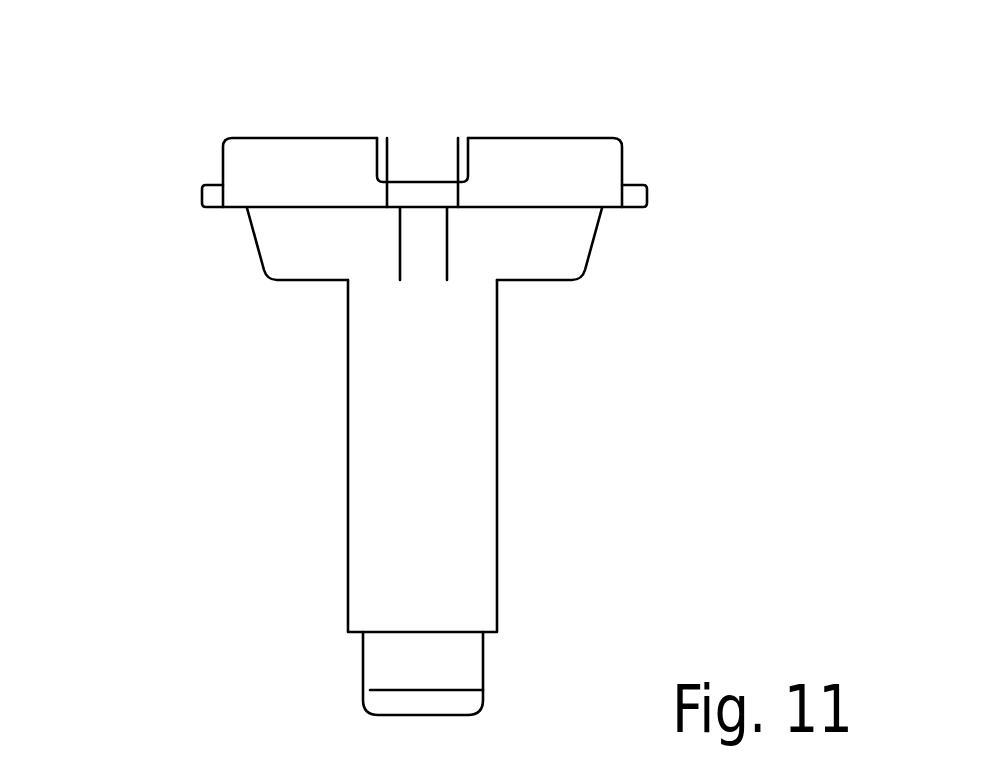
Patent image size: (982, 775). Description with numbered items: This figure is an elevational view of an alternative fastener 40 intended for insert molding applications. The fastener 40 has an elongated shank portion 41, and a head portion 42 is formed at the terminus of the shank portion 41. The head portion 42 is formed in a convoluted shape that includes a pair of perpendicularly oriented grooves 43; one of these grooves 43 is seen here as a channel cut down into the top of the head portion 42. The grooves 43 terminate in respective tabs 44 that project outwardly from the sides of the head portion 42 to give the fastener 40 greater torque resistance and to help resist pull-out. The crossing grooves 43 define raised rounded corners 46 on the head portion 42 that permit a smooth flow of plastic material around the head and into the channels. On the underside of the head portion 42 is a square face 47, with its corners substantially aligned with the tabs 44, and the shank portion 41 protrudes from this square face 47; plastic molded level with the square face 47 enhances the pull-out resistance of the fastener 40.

The fastener 40 is at (257, 378).
The shank portion 41 is at (478, 453).
The head portion 42 is at (578, 102).
The grooves 43 is at (422, 145).
The tabs 44 is at (201, 199).
The raised rounded corners 46 is at (224, 140).
The square face 47 is at (568, 270).